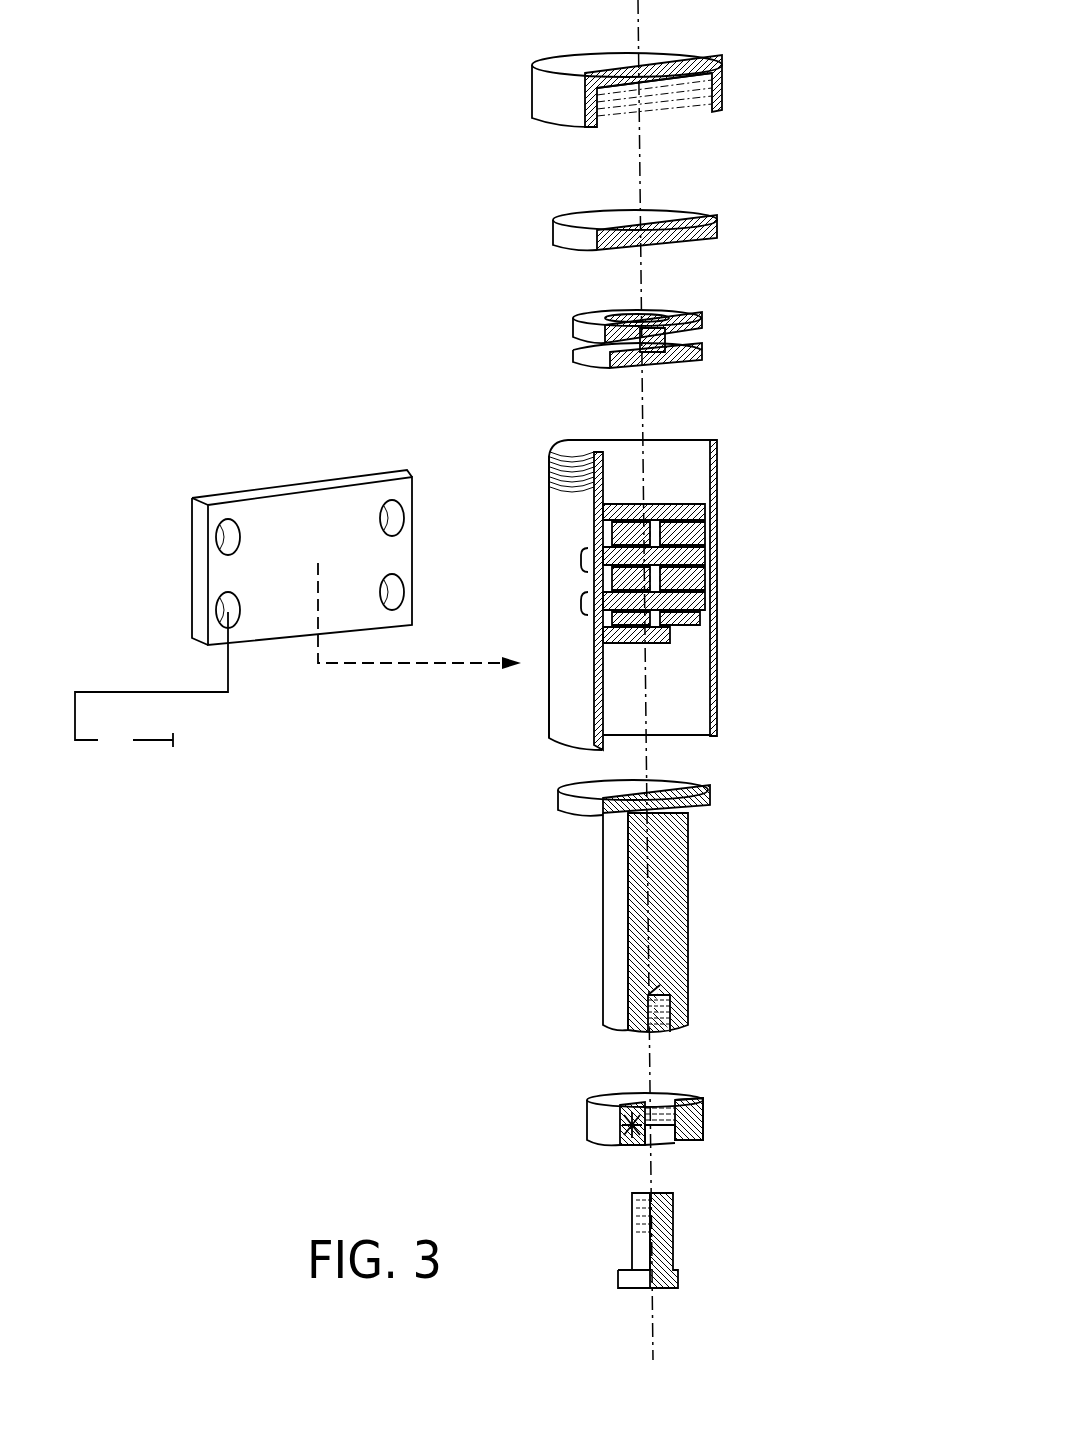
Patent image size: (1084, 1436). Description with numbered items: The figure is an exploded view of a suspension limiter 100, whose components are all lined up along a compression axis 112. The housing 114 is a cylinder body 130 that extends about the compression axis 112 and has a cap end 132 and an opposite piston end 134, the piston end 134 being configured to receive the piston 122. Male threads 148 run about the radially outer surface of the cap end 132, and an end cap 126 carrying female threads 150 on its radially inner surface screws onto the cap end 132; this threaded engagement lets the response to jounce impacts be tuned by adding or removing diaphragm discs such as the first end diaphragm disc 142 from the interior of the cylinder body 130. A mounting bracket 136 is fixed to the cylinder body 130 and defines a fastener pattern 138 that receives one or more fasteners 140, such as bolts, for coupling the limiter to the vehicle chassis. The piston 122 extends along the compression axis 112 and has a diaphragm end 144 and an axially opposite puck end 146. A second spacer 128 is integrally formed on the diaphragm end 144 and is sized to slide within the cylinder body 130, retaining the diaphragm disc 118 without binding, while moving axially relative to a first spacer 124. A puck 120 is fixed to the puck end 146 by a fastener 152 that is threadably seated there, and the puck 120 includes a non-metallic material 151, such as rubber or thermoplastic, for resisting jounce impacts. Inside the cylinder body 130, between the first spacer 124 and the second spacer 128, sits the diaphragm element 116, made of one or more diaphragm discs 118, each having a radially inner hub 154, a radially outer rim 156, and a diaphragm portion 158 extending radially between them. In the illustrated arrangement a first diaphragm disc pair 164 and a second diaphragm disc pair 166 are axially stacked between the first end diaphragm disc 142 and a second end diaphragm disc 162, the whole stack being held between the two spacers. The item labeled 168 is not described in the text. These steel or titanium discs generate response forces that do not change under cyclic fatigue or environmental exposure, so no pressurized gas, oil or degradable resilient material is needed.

The suspension limiter 100 is at (413, 958).
The compression axis 112 is at (640, 185).
The housing 114 is at (576, 598).
The diaphragm element 116 is at (728, 502).
The diaphragm disc 118 is at (680, 603).
The puck 120 is at (636, 1129).
The piston 122 is at (690, 885).
The first spacer 124 is at (715, 222).
The end cap 126 is at (722, 85).
The second spacer 128 is at (710, 795).
The cylinder body 130 is at (565, 712).
The cap end 132 is at (670, 576).
The piston end 134 is at (737, 724).
The mounting bracket 136 is at (263, 612).
The fastener pattern 138 is at (302, 581).
The fastener 140 is at (147, 742).
The first end diaphragm disc 142 is at (675, 512).
The diaphragm end 144 is at (633, 906).
The puck end 146 is at (573, 1006).
The male threads 148 is at (560, 465).
The female threads 150 is at (665, 98).
The non-metallic material 151 is at (632, 1130).
The fastener 152 is at (673, 1225).
The radially inner hub 154 is at (658, 612).
The radially outer rim 156 is at (697, 603).
The diaphragm portion 158 is at (632, 612).
The second end diaphragm disc 162 is at (632, 644).
The first diaphragm disc pair 164 is at (580, 604).
The second diaphragm disc pair 166 is at (584, 552).
The insulator 168 is at (702, 320).